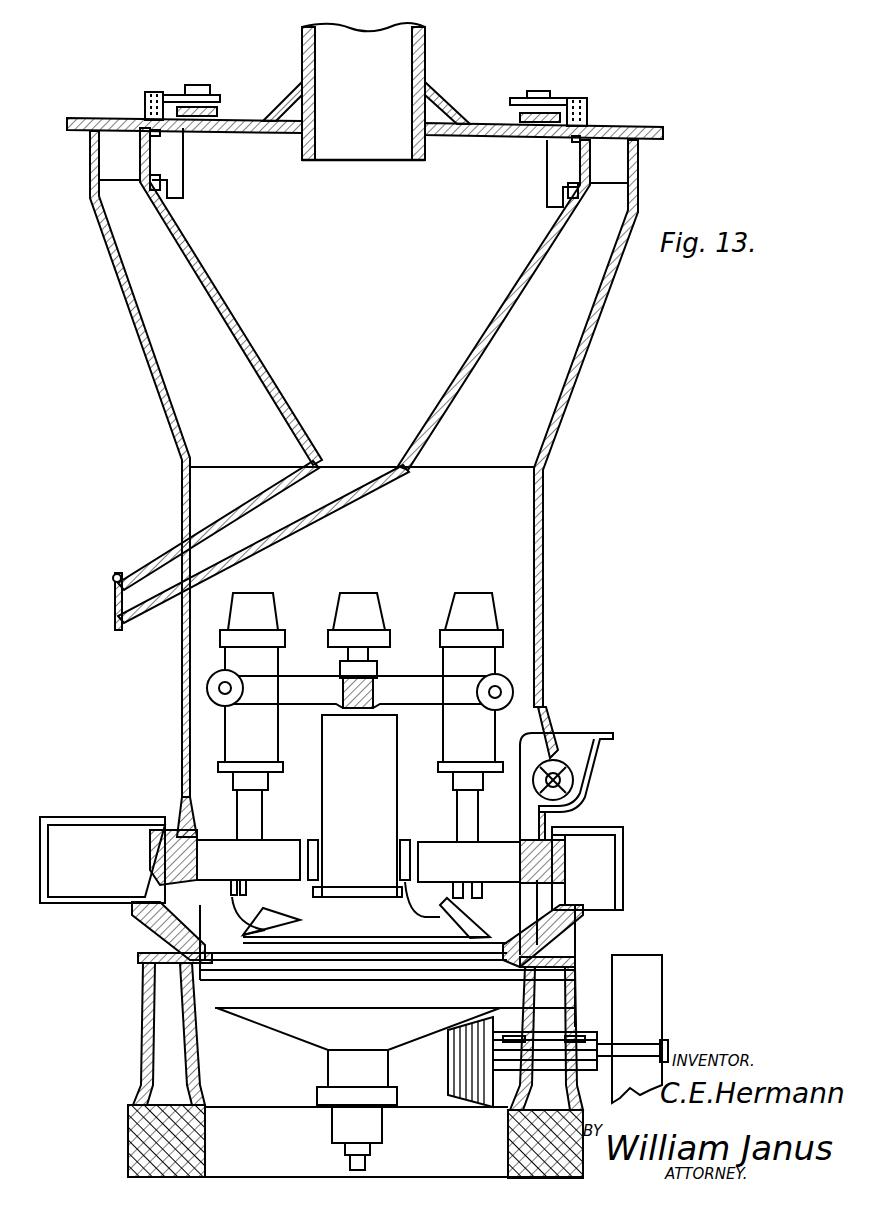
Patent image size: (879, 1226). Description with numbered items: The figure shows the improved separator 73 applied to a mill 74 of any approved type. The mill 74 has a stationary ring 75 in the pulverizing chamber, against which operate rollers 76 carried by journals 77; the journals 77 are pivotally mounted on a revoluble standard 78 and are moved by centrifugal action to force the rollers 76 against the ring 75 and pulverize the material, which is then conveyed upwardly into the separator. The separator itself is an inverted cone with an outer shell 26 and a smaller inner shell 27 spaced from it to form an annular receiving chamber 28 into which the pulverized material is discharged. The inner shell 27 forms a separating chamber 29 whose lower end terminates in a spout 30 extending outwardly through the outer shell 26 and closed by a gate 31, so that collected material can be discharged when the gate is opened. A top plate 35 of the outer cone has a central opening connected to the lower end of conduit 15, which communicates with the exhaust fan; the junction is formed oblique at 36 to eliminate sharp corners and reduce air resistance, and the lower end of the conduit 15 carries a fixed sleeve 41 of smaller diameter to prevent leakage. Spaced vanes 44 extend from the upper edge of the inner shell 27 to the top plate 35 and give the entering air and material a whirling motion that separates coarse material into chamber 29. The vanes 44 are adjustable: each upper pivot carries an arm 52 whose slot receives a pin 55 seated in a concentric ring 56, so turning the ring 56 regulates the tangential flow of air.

The conduit 15 is at (300, 46).
The outer shell 26 is at (583, 362).
The inner shell 27 is at (520, 303).
The annular receiving chamber 28 is at (117, 152).
The separating chamber 29 is at (362, 376).
The spout 30 is at (158, 567).
The gate 31 is at (115, 602).
The top plate 35 is at (113, 118).
The oblique junction 36 is at (287, 112).
The fixed sleeve 41 is at (400, 150).
The vanes 44 is at (170, 160).
The arm 52 is at (148, 92).
The pin 55 is at (538, 91).
The ring 56 is at (212, 102).
The separator 73 is at (572, 425).
The mill 74 is at (522, 647).
The stationary ring 75 is at (153, 853).
The rollers 76 is at (358, 889).
The journals 77 is at (247, 735).
The revoluble standard 78 is at (357, 745).